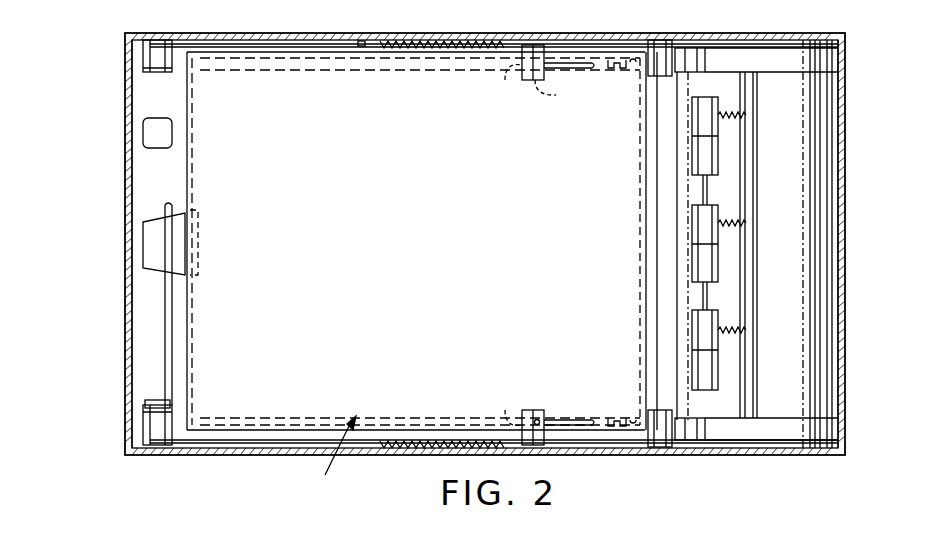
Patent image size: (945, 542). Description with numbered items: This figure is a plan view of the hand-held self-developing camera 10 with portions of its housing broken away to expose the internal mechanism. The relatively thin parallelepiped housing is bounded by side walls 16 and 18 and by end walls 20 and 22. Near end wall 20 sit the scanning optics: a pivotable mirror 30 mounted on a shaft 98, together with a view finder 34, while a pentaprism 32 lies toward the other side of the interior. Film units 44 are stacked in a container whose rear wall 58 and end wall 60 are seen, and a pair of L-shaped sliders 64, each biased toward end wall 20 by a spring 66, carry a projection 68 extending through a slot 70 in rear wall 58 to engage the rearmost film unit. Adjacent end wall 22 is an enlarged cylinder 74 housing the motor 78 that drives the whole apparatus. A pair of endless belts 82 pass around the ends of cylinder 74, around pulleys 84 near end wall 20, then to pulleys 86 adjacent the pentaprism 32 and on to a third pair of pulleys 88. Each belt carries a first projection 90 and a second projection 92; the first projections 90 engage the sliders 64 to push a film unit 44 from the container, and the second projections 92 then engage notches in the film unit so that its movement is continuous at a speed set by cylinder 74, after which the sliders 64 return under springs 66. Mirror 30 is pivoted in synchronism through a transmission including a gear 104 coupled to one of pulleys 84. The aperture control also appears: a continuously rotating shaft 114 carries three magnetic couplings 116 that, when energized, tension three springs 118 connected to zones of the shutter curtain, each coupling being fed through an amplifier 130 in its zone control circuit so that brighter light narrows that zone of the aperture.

The camera 10 is at (108, 113).
The side wall 16 is at (255, 40).
The side wall 18 is at (258, 450).
The end wall 20 is at (125, 292).
The end wall 22 is at (848, 264).
The mirror 30 is at (150, 236).
The pentaprism 32 is at (662, 203).
The view finder 34 is at (143, 135).
The film unit 44 is at (333, 455).
The rear wall 58 is at (424, 204).
The end wall 60 is at (636, 296).
The slider 64 is at (545, 48).
The spring 66 is at (436, 44).
The projection 68 is at (537, 410).
The slot 70 is at (590, 62).
The cylinder 74 is at (818, 130).
The motor 78 is at (805, 182).
The endless belt 82 is at (766, 58).
The pulley 84 is at (160, 40).
The pulley 86 is at (660, 42).
The pulley 88 is at (692, 48).
The first projection 90 is at (508, 78).
The second projection 92 is at (636, 72).
The shaft 98 is at (165, 320).
The gear 104 is at (145, 405).
The shaft 114 is at (705, 205).
The magnetic coupling 116 is at (700, 156).
The spring 118 is at (730, 118).
The amplifier 130 is at (745, 296).